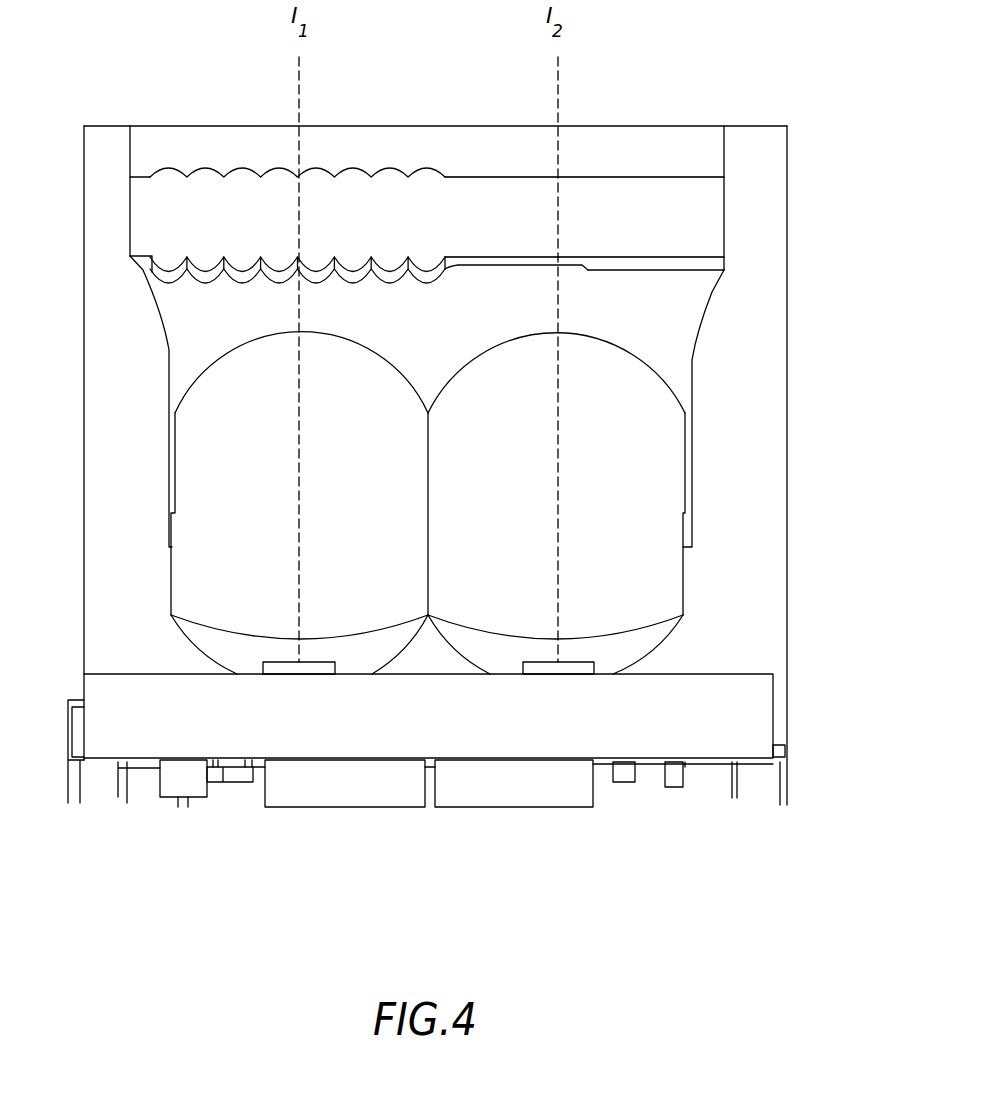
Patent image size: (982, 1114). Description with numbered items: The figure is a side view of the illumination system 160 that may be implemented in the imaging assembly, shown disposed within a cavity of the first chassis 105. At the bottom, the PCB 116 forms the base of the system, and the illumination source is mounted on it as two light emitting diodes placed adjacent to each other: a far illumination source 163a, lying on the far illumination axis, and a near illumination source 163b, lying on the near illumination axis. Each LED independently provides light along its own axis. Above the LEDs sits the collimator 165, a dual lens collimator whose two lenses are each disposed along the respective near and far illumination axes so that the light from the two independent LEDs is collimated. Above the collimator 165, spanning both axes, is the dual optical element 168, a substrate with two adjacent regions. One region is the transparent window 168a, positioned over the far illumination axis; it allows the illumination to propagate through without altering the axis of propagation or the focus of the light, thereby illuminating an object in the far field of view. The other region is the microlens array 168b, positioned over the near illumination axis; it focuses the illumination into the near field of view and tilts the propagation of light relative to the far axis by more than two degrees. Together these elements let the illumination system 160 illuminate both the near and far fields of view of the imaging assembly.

The illumination system 160 is at (137, 65).
The first chassis 105 is at (787, 443).
The dual optical element 168 is at (725, 215).
The transparent window 168a is at (697, 177).
The microlens array 168b is at (178, 167).
The collimator 165 is at (685, 498).
The far illumination source 163a is at (558, 674).
The near illumination source 163b is at (300, 674).
The PCB 116 is at (754, 762).